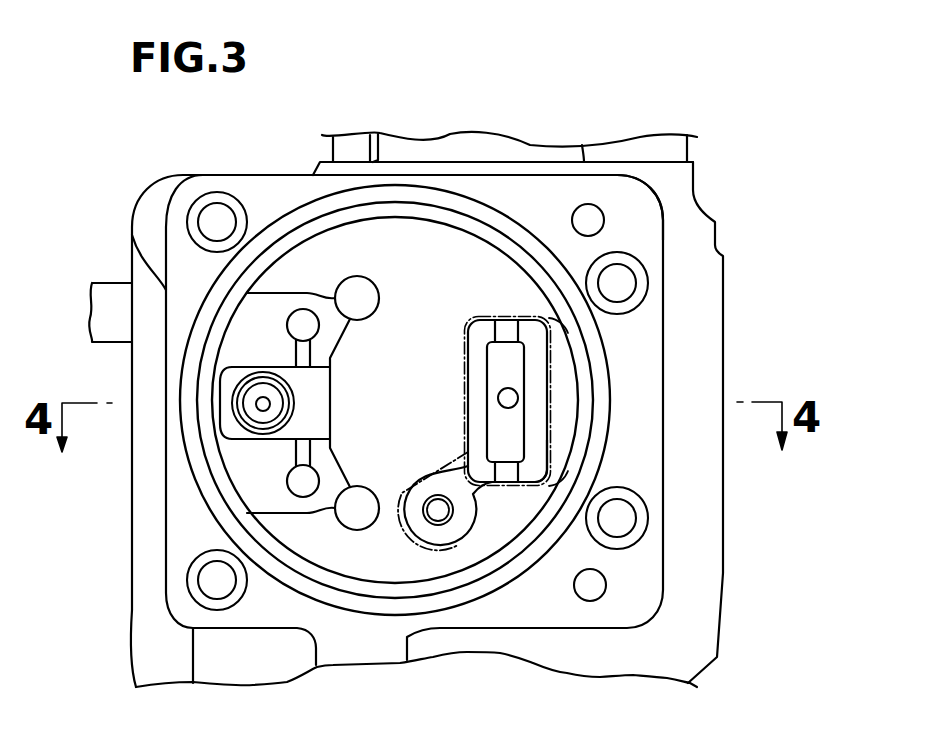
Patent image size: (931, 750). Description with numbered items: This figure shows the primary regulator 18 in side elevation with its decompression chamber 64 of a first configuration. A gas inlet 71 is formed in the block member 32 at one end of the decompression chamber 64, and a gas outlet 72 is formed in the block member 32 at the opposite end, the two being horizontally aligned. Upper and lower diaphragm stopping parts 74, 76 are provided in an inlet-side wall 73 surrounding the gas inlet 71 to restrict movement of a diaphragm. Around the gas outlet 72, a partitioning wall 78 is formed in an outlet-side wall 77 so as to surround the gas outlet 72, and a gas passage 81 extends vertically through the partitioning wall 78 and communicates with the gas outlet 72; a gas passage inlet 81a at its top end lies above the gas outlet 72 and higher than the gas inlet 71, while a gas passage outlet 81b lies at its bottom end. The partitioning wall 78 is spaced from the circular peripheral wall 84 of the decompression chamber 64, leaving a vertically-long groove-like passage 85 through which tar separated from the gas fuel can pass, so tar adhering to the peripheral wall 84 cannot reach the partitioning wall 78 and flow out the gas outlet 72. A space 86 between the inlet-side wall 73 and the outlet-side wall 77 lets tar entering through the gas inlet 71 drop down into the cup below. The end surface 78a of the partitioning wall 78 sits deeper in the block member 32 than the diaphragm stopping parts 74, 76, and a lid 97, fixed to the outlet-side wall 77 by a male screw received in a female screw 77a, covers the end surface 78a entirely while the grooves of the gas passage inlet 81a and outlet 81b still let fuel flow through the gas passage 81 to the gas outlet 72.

The primary regulator 18 is at (143, 176).
The block member 32 is at (638, 208).
The decompression chamber 64 is at (422, 252).
The space 86 is at (413, 380).
The inlet-side wall 73 is at (235, 357).
The upper diaphragm stopping part 74 is at (357, 292).
The lower diaphragm stopping part 76 is at (360, 515).
The gas inlet 71 is at (263, 404).
The partitioning wall 78 is at (550, 348).
The end surface of the partitioning wall 78a is at (540, 462).
The gas passage 81 is at (516, 430).
The gas passage inlet 81a is at (512, 330).
The gas passage outlet 81b is at (515, 474).
The gas outlet 72 is at (512, 400).
The vertically-long passage 85 is at (563, 409).
The outlet-side wall 77 is at (463, 497).
The female screw 77a is at (445, 520).
The circular peripheral wall 84 is at (434, 515).
The lid 97 is at (522, 467).